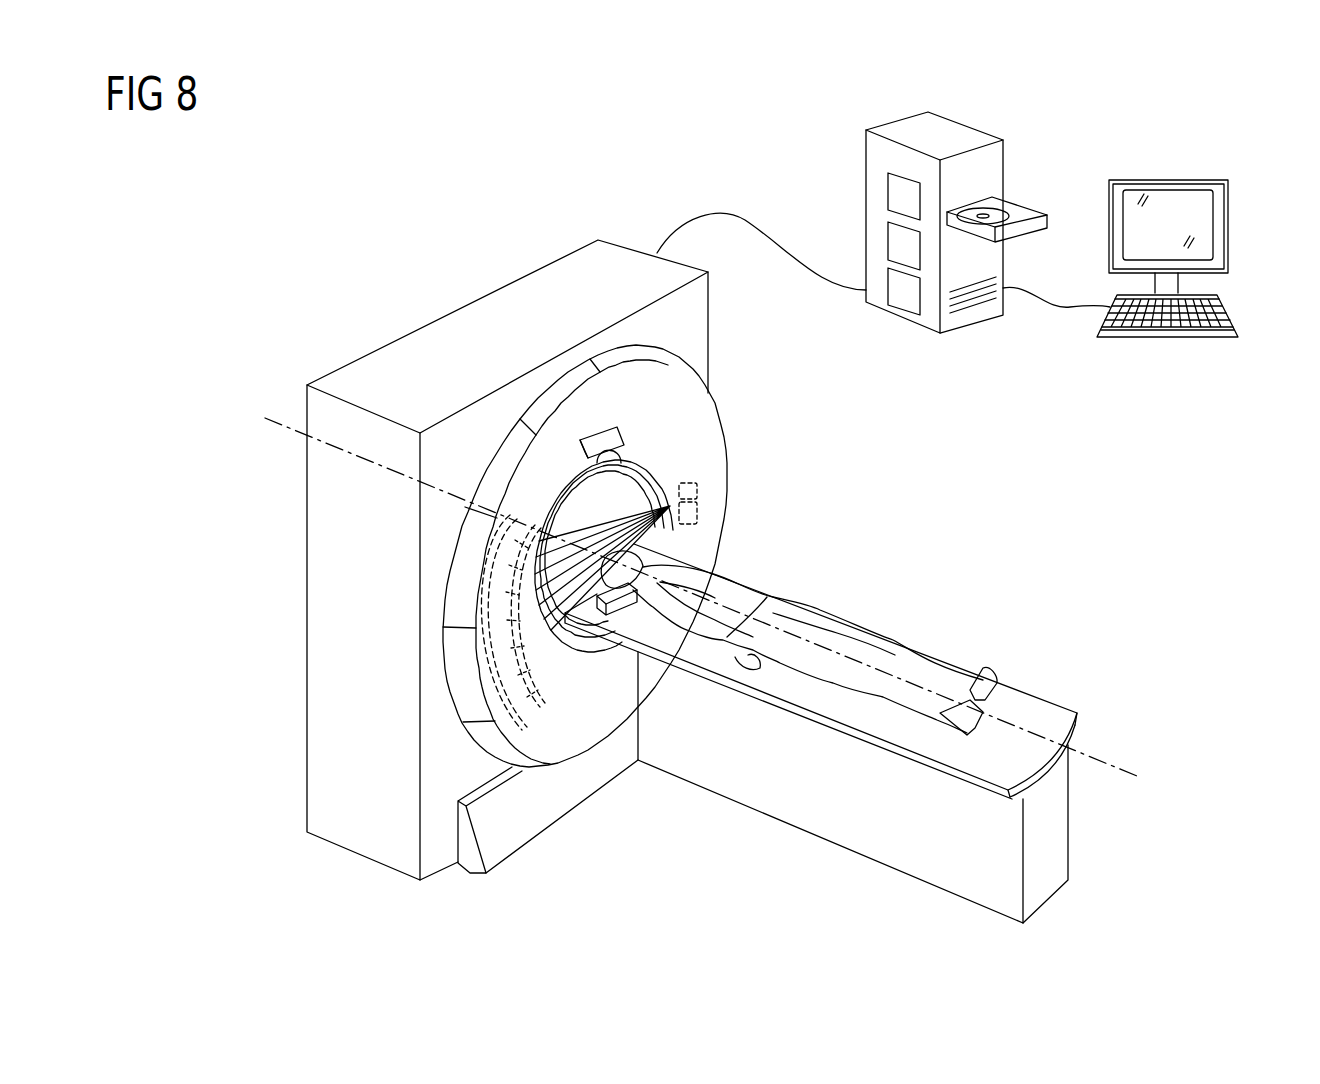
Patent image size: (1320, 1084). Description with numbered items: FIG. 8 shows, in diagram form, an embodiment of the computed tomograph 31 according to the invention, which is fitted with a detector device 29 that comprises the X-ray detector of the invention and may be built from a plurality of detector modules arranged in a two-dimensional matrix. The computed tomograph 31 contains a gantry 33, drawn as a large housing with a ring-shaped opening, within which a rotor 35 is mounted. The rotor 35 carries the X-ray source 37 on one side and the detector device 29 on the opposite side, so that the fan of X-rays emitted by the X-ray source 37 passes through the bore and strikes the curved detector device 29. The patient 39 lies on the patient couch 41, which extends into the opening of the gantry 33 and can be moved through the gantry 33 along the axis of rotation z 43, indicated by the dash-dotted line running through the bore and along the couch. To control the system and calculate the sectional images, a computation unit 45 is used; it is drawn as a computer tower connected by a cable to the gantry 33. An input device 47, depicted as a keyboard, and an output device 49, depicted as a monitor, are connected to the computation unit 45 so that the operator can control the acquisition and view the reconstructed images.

The detector device 29 is at (527, 703).
The computed tomograph 31 is at (501, 560).
The gantry 33 is at (405, 325).
The rotor 35 is at (707, 413).
The X-ray source 37 is at (700, 507).
The patient 39 is at (833, 632).
The patient couch 41 is at (848, 819).
The axis of rotation z 43 is at (283, 429).
The computation unit 45 is at (950, 138).
The input device 47 is at (1240, 332).
The output device 49 is at (1230, 216).